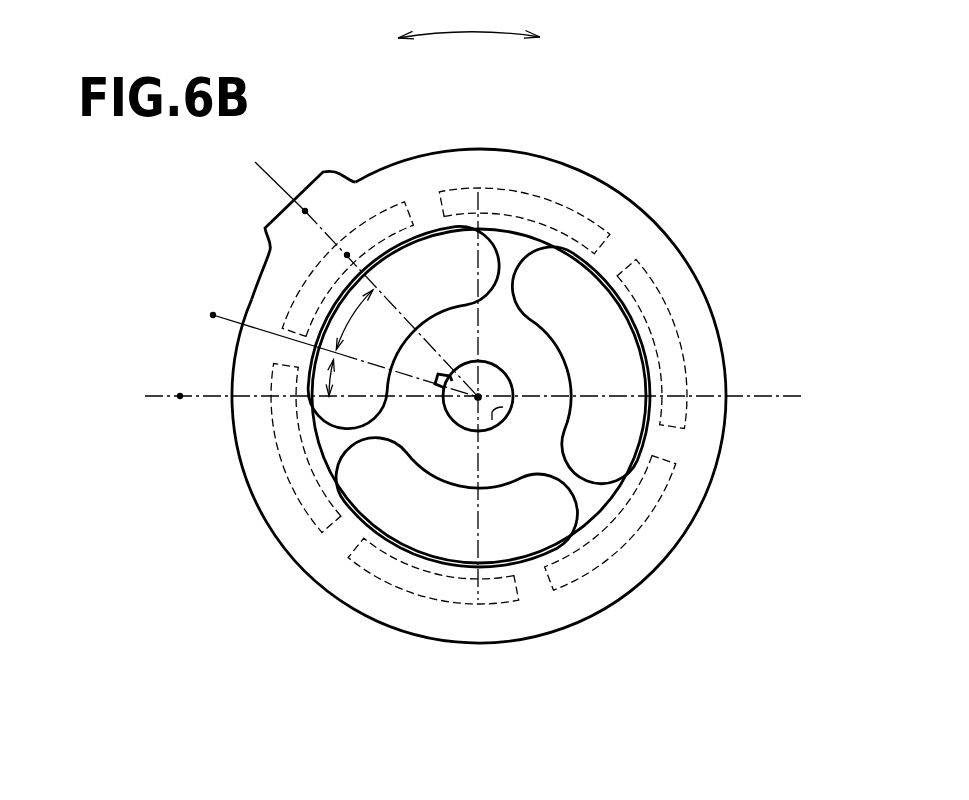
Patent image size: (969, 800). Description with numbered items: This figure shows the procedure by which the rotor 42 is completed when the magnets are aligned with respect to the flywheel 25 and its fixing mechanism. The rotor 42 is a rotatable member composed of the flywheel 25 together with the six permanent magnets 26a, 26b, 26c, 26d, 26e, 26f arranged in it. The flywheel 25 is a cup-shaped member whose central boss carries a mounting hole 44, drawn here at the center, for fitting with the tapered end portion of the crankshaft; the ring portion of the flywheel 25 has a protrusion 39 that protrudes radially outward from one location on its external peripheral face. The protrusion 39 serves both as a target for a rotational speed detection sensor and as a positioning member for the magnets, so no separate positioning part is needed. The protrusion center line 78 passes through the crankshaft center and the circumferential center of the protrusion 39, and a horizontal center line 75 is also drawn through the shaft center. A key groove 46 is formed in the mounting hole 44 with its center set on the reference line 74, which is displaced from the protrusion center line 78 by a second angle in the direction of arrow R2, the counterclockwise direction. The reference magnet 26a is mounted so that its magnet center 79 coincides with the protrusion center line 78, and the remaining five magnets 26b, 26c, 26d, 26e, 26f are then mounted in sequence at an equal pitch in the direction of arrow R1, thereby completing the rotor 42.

The flywheel 25 is at (627, 190).
The reference magnet 26a is at (313, 278).
The magnet 26b is at (523, 193).
The magnet 26c is at (668, 335).
The magnet 26d is at (620, 535).
The magnet 26e is at (445, 593).
The magnet 26f is at (292, 445).
The protrusion 39 is at (285, 214).
The rotor 42 is at (747, 187).
The mounting hole 44 is at (503, 407).
The key groove 46 is at (458, 410).
The reference line 74 is at (213, 315).
The center line 75 is at (180, 396).
The protrusion center line 78 is at (305, 210).
The magnet center 79 is at (347, 255).
The arrow R1 is at (493, 38).
The arrow R2 is at (384, 38).